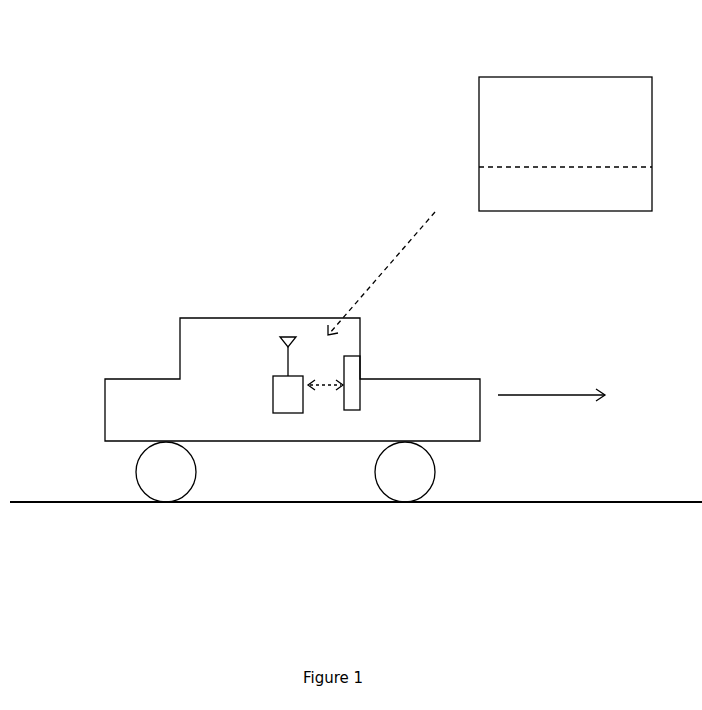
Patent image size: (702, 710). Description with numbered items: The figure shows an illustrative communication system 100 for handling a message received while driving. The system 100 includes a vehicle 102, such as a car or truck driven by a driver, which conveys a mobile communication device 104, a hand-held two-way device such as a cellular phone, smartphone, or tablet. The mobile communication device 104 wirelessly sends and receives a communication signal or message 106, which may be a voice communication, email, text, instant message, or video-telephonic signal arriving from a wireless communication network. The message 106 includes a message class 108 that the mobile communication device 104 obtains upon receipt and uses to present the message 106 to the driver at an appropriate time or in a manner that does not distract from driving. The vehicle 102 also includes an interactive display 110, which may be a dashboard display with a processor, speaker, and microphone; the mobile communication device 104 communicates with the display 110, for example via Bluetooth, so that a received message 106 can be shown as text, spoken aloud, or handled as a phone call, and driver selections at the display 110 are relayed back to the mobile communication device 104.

The communication system 100 is at (202, 133).
The vehicle 102 is at (203, 325).
The mobile communication device 104 is at (273, 392).
The message 106 is at (489, 77).
The message class 108 is at (593, 211).
The interactive display 110 is at (344, 410).